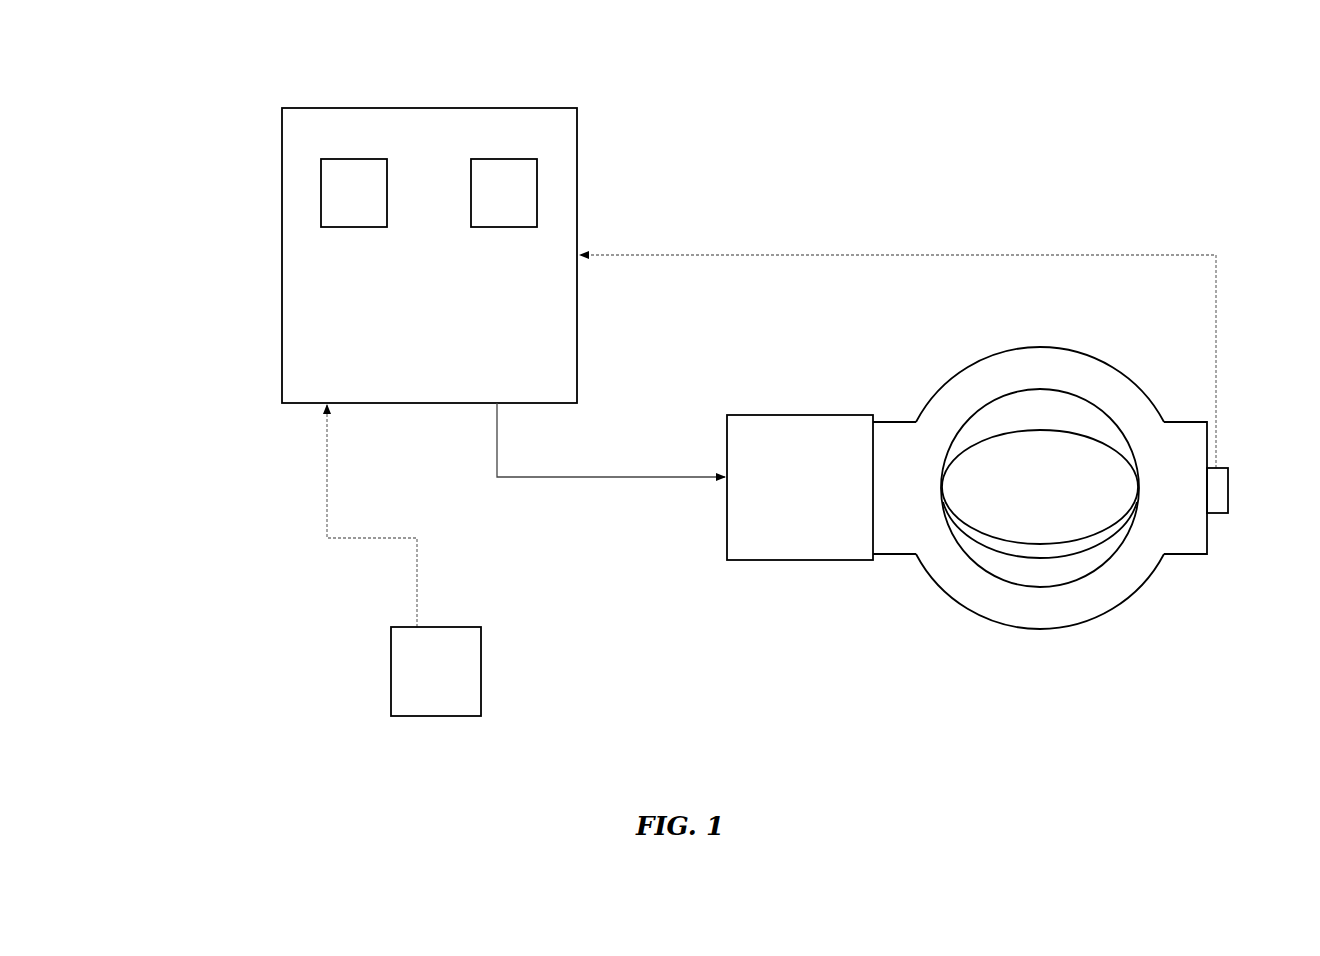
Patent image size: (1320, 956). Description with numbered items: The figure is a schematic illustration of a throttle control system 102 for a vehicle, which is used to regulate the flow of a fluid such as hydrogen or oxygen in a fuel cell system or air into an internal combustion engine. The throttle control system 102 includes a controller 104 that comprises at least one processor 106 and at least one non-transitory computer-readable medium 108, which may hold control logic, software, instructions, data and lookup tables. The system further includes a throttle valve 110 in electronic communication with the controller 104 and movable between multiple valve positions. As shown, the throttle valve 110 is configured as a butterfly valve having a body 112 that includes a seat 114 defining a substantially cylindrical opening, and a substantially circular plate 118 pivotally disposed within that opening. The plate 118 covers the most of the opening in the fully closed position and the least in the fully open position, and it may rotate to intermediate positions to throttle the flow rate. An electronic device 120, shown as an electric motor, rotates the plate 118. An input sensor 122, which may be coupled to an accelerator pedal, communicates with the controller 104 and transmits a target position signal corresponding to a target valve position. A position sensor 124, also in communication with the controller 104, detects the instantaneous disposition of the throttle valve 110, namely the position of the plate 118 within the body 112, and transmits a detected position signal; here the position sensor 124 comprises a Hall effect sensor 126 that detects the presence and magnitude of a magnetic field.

The throttle control system 102 is at (225, 254).
The controller 104 is at (578, 151).
The processor 106 is at (348, 159).
The non-transitory computer-readable medium 108 is at (515, 159).
The throttle valve 110 is at (963, 612).
The body 112 is at (987, 355).
The seat 114 is at (968, 420).
The plate 118 is at (1057, 555).
The electronic device 120 is at (798, 415).
The input sensor 122 is at (481, 716).
The position sensor 124 is at (1216, 513).
The Hall effect sensor 126 is at (1229, 485).